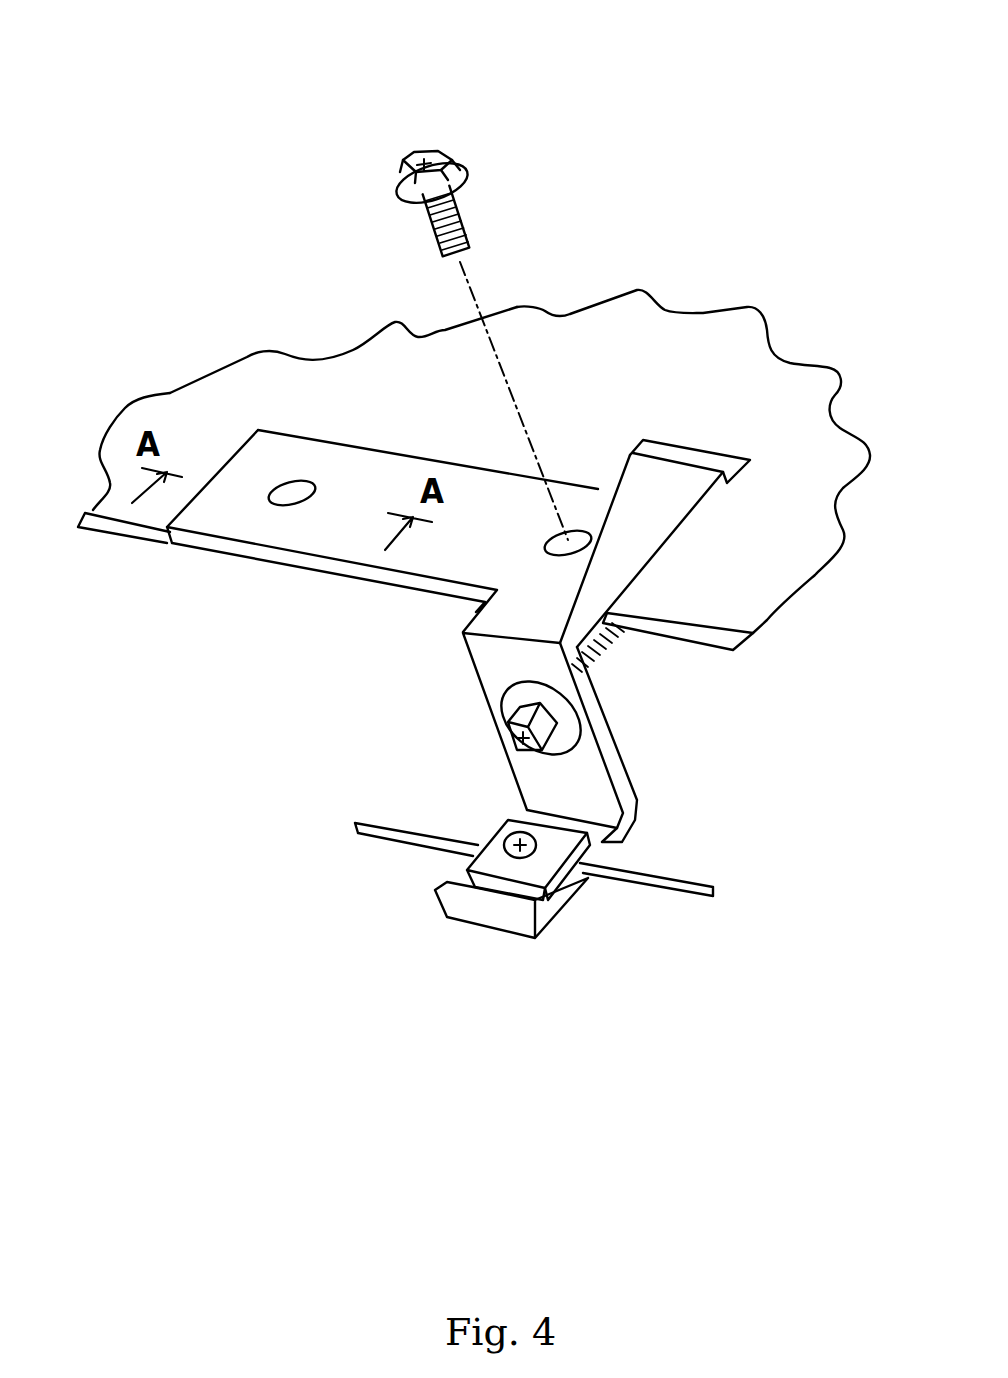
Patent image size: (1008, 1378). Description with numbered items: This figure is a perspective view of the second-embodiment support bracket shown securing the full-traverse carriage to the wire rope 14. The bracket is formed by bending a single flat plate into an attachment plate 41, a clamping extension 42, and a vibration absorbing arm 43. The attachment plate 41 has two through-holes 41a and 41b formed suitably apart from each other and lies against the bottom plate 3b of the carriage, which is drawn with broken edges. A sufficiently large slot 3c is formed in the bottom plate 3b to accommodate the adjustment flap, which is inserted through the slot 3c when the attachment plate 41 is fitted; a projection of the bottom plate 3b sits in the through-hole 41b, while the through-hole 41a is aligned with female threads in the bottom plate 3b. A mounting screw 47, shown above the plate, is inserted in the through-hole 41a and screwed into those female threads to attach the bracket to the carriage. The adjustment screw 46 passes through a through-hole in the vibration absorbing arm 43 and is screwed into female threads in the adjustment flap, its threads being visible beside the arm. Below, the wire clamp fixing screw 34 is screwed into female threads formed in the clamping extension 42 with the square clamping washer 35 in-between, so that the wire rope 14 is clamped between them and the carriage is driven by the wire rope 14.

The bottom plate 3b is at (197, 413).
The slot 3c is at (707, 457).
The attachment plate 41 is at (387, 477).
The through-hole 41a is at (577, 533).
The through-hole 41b is at (290, 480).
The mounting screw 47 is at (438, 153).
The clamping extension 42 is at (563, 900).
The vibration absorbing arm 43 is at (588, 773).
The adjustment screw 46 is at (627, 647).
The wire clamp fixing screw 34 is at (515, 835).
The square clamping washer 35 is at (445, 922).
The wire rope 14 is at (670, 890).